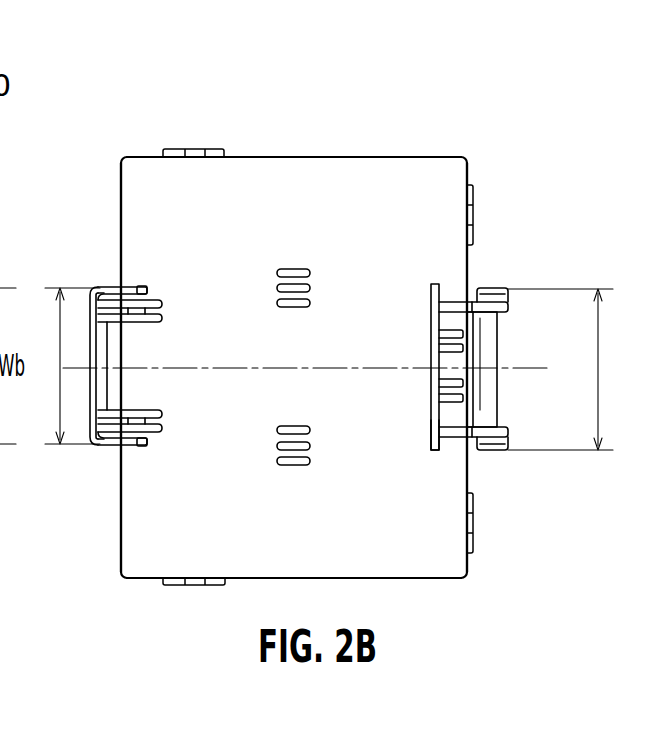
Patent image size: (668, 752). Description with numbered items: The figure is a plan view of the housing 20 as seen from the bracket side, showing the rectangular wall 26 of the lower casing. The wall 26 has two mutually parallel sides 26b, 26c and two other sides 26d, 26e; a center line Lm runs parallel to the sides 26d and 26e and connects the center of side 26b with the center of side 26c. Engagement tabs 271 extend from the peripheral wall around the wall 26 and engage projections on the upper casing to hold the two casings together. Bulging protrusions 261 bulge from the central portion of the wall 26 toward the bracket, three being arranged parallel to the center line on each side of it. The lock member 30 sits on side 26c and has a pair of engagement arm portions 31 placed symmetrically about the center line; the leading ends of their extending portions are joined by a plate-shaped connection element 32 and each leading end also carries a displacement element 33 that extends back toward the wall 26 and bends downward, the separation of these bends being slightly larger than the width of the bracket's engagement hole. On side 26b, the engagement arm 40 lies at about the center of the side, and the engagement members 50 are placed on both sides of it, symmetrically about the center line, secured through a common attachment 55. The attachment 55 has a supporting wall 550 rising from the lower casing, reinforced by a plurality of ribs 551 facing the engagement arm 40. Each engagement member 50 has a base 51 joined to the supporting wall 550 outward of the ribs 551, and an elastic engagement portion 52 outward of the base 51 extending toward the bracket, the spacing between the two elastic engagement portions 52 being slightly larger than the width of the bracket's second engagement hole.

The housing 20 is at (472, 157).
The wall 26 is at (359, 174).
The side 26b is at (468, 568).
The side 26c is at (120, 557).
The side 26d is at (428, 157).
The side 26e is at (432, 579).
The bulging protrusions 261 is at (277, 303).
The engagement tabs 271 is at (178, 149).
The lock member 30 is at (92, 288).
The engagement arm portions 31 is at (151, 319).
The connection element 32 is at (98, 379).
The displacement element 33 is at (114, 287).
The engagement arm 40 is at (500, 400).
The engagement members 50 is at (509, 288).
The base 51 is at (500, 309).
The elastic engagement portion 52 is at (508, 298).
The attachment 55 is at (432, 285).
The supporting wall 550 is at (437, 432).
The ribs 551 is at (445, 334).